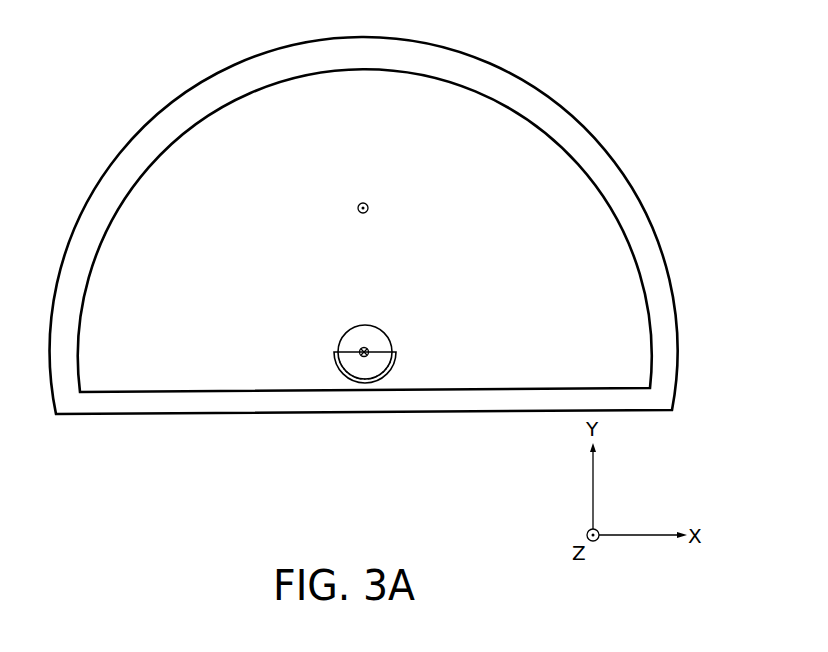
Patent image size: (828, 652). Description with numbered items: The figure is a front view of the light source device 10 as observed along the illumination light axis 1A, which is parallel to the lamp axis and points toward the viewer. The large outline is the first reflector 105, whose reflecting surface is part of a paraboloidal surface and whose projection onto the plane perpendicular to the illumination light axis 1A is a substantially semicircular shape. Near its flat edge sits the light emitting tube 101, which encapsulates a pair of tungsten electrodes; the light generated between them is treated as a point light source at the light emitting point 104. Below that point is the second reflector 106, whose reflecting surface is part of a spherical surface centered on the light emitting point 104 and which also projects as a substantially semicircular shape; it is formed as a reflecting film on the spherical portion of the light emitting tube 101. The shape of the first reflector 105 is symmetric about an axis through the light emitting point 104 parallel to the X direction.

The light source device 10 is at (121, 118).
The first reflector 105 is at (586, 172).
The illumination light axis 1A is at (364, 200).
The light emitting tube 101 is at (332, 345).
The light emitting point 104 is at (362, 360).
The second reflector 106 is at (380, 360).